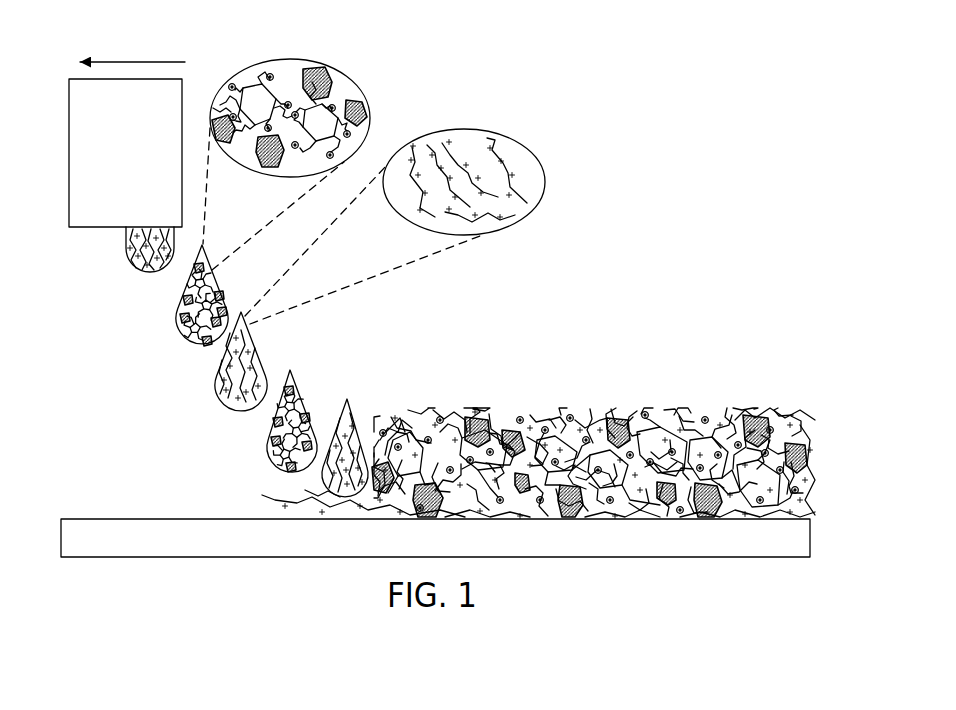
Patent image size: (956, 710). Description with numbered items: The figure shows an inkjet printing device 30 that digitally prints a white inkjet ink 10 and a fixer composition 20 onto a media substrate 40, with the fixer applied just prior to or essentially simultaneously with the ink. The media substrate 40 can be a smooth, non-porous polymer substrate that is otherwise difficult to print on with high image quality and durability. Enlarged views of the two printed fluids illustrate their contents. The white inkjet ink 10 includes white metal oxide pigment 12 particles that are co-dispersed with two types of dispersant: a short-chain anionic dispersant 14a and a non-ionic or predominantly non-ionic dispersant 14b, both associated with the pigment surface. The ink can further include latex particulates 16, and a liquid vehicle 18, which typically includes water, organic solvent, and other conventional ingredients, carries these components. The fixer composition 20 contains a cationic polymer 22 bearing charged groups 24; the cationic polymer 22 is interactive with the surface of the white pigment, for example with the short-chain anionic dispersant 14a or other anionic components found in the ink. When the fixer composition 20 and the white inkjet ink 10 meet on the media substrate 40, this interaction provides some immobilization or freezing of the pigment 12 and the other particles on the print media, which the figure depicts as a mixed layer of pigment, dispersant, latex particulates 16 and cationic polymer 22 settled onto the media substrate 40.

The white inkjet ink 10 is at (376, 107).
The white metal oxide pigment 12 is at (256, 95).
The short-chain anionic dispersant 14a is at (243, 90).
The non-ionic or predominantly non-ionic dispersant 14b is at (278, 88).
The latex particulates 16 is at (320, 74).
The liquid vehicle 18 is at (222, 105).
The fixer composition 20 is at (554, 160).
The cationic polymer 22 is at (490, 139).
The charged group 24 is at (462, 137).
The inkjet printing device 30 is at (112, 165).
The media substrate 40 is at (422, 550).